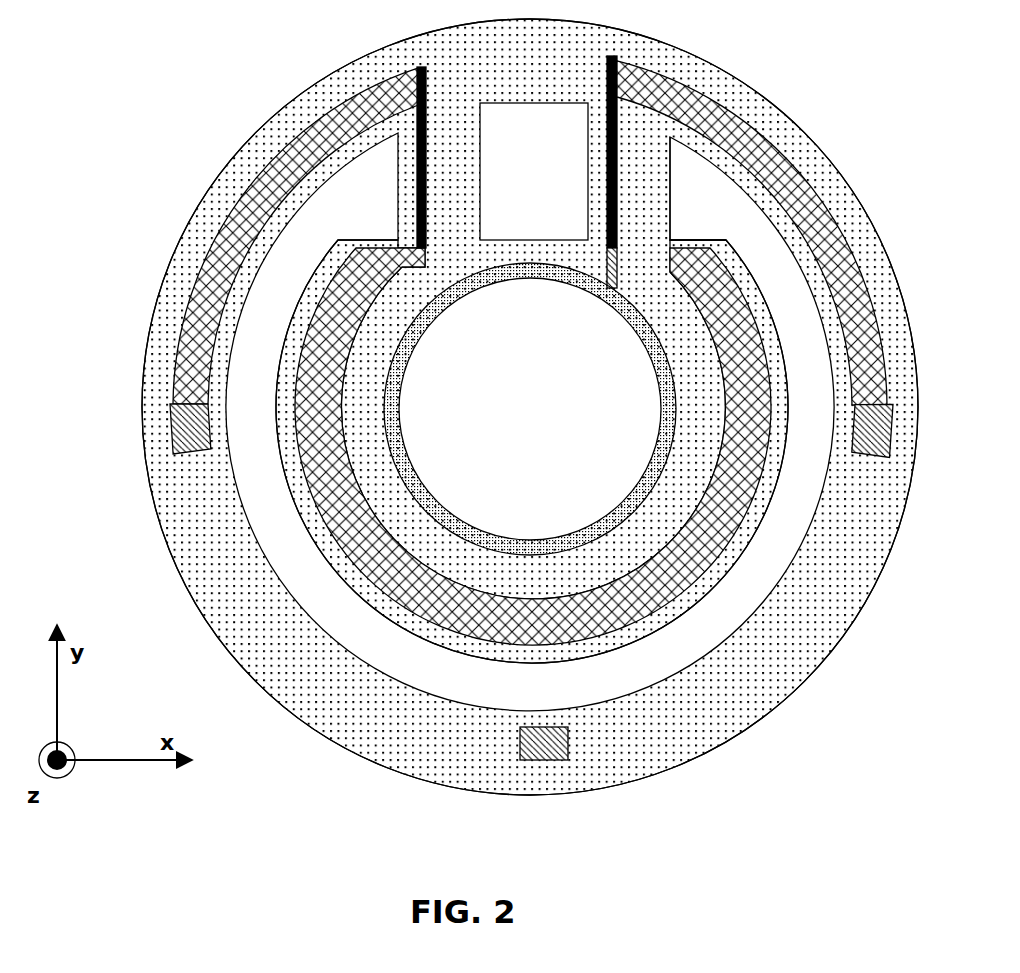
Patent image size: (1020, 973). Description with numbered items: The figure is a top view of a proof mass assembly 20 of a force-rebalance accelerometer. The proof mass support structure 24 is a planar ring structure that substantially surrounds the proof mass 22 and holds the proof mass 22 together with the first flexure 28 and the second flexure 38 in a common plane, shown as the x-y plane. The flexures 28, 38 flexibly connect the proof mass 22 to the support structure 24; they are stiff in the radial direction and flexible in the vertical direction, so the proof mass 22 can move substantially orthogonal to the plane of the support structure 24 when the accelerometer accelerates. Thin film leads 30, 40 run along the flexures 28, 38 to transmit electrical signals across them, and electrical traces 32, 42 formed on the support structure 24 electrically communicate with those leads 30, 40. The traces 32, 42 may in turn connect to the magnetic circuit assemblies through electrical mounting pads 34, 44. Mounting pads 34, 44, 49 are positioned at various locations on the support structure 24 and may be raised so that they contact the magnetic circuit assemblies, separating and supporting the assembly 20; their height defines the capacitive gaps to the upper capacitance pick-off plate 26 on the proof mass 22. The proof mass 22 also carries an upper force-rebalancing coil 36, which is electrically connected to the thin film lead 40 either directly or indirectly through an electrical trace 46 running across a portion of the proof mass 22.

The proof mass assembly 20 is at (844, 74).
The proof mass 22 is at (630, 633).
The proof mass support structure 24 is at (262, 140).
The upper capacitance pick-off plate 26 is at (326, 398).
The first flexure 28 is at (445, 152).
The thin film lead 30 is at (416, 177).
The electrical trace 32 is at (243, 240).
The mounting pad 34 is at (188, 440).
The upper force-rebalancing coil 36 is at (500, 540).
The second flexure 38 is at (632, 172).
The thin film lead 40 is at (606, 117).
The electrical trace 42 is at (768, 147).
The mounting pad 44 is at (862, 432).
The electrical trace 46 is at (610, 262).
The mounting pad 49 is at (540, 730).